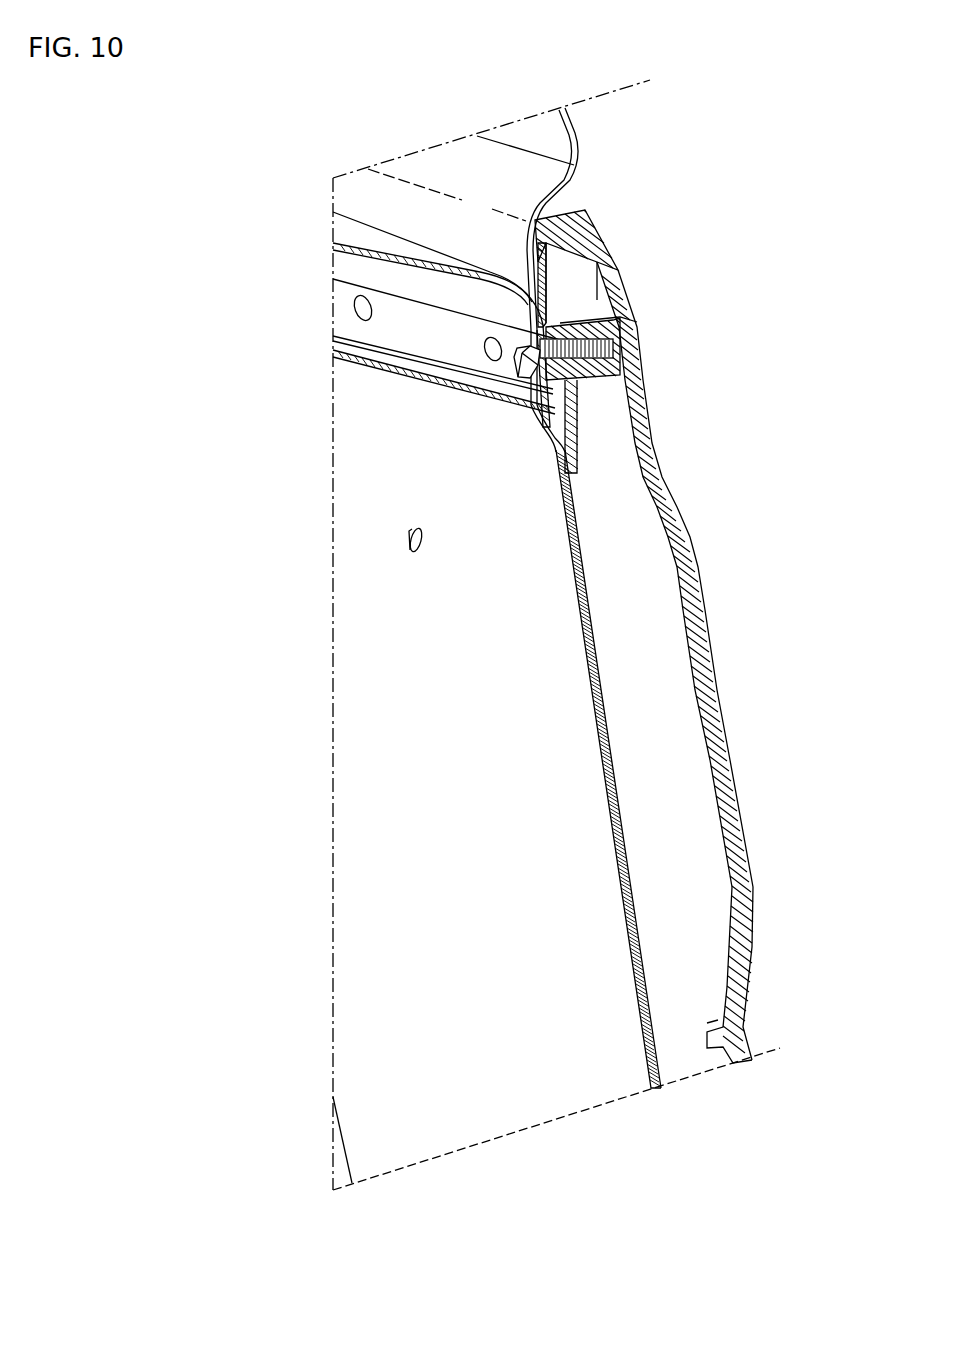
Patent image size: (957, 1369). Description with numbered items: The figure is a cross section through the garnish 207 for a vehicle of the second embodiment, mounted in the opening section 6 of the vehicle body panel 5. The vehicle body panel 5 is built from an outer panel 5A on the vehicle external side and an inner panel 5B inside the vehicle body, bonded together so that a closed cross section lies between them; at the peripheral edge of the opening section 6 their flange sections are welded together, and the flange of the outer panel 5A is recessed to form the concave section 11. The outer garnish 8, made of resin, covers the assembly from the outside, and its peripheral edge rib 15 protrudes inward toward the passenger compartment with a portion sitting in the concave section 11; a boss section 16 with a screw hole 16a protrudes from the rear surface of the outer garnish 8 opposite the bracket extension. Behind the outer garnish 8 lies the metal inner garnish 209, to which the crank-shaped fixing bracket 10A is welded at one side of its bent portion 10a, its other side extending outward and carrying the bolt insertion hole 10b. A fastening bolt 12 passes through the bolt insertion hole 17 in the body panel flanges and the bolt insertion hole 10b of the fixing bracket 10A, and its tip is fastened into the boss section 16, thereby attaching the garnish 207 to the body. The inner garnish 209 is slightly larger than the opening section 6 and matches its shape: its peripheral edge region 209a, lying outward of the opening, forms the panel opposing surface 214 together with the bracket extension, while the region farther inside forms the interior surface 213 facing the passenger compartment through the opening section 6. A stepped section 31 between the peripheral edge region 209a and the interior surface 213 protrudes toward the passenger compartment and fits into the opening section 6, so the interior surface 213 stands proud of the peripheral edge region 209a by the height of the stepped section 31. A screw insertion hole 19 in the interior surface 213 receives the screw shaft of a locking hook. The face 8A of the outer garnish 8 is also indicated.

The vehicle body panel 5 is at (590, 132).
The outer panel 5A is at (576, 170).
The inner panel 5B is at (376, 253).
The concave section 11 is at (565, 217).
The peripheral edge rib 15 is at (600, 268).
The boss section 16 is at (617, 294).
The screw hole 16a is at (637, 323).
The bolt insertion hole 10b is at (623, 344).
The bent portion 10a is at (568, 396).
The fixing bracket 10A is at (591, 452).
The garnish for a vehicle 207 is at (677, 629).
The outer garnish 8 is at (705, 584).
The pillar panel outer face 8A is at (722, 700).
The panel opposing surface 214 is at (333, 279).
The fastening bolt 12 is at (513, 363).
The opening section 6 is at (515, 366).
The bolt insertion hole 17 is at (540, 363).
The peripheral edge region 209a is at (550, 385).
The stepped section 31 is at (562, 410).
The screw insertion hole 19 is at (410, 552).
The interior surface 213 is at (375, 725).
The inner garnish 209 is at (515, 748).